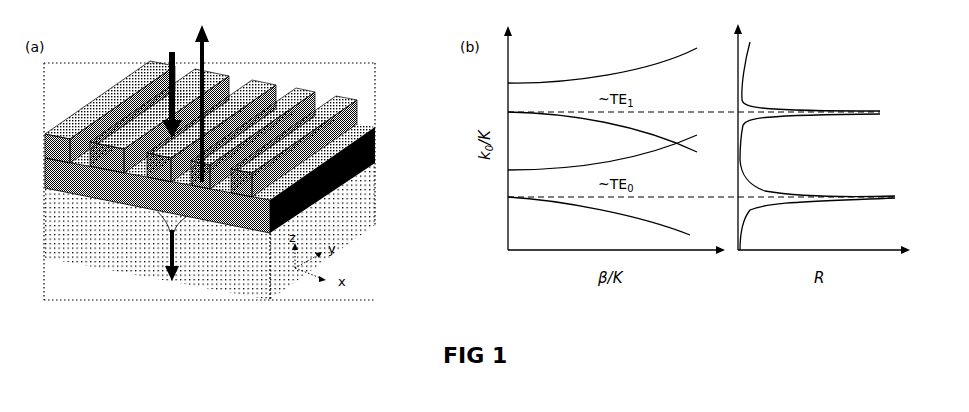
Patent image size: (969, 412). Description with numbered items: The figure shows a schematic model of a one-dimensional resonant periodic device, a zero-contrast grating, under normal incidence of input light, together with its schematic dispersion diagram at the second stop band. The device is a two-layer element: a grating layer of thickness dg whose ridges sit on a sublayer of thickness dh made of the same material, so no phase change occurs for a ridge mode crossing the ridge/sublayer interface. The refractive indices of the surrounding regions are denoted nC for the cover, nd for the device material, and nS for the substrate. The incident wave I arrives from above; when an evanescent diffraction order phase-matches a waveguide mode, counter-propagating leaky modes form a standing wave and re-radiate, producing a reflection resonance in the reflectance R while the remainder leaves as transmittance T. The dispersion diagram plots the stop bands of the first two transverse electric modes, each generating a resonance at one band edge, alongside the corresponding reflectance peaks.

The incident wave I is at (169, 88).
The reflectance R is at (214, 103).
The transmittance T is at (179, 249).
The cover refractive index nC is at (388, 74).
The device refractive index nd is at (221, 180).
The substrate refractive index nS is at (221, 231).
The grating layer thickness dg is at (66, 136).
The sublayer thickness dh is at (45, 188).